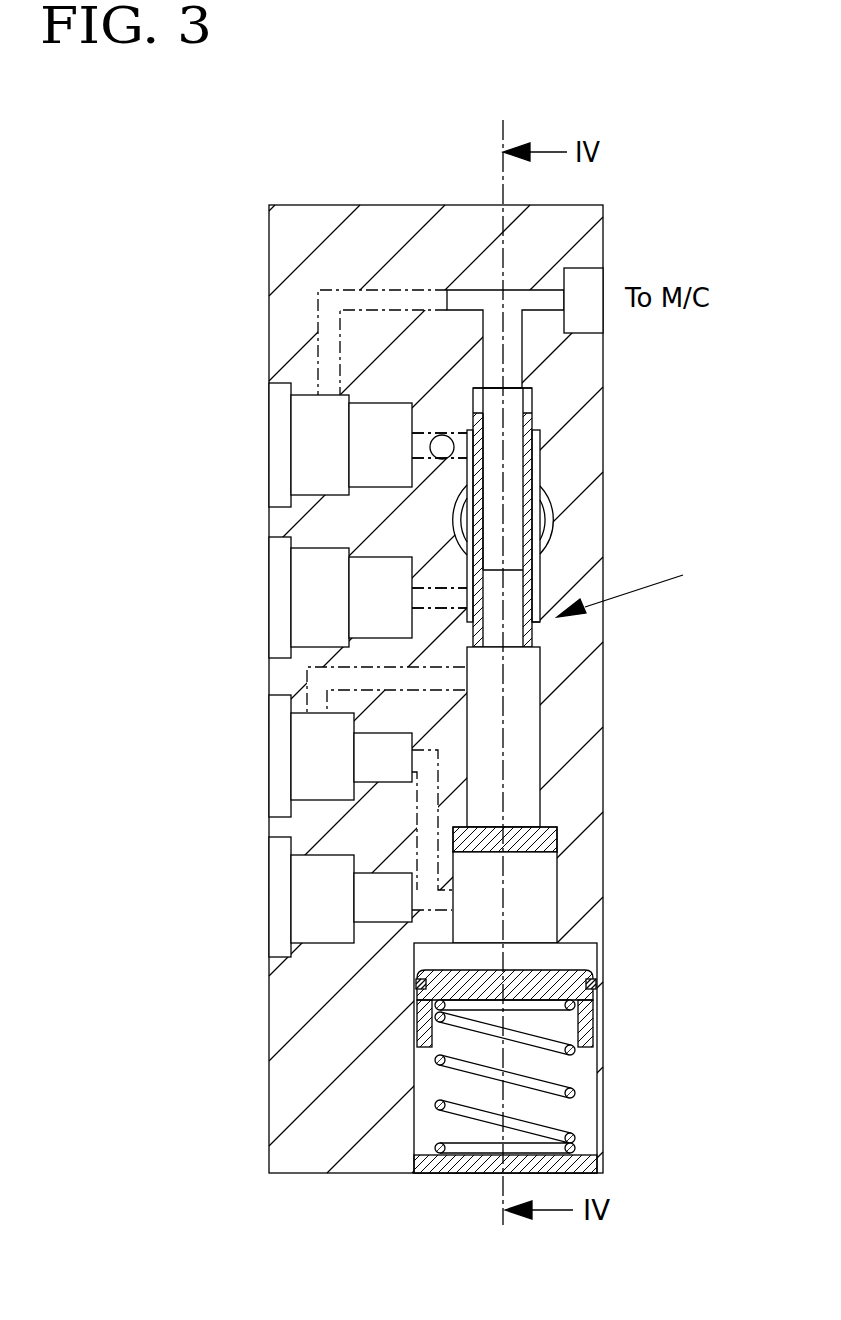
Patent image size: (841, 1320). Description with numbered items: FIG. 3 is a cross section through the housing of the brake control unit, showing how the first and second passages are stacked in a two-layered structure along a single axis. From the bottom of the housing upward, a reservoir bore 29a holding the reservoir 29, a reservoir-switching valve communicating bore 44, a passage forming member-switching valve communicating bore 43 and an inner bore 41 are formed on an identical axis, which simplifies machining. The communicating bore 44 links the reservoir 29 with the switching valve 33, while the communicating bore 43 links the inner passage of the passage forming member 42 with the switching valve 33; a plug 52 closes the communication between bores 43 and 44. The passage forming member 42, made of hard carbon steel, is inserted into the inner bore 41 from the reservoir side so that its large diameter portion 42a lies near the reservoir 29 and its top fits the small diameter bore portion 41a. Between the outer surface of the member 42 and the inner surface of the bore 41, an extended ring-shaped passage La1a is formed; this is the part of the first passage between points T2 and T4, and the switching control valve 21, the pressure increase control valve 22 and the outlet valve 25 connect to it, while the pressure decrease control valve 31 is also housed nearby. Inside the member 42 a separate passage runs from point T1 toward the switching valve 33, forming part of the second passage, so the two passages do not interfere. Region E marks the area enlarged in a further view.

The switching control valve 21 is at (268, 432).
The pressure increase control valve 22 is at (268, 590).
The switching valve 33 is at (268, 768).
The pressure decrease control valve 31 is at (268, 912).
The point T1 is at (548, 272).
The point T2 is at (465, 437).
The point T4 is at (463, 610).
The inner bore 41 is at (540, 567).
The small diameter bore portion 41a is at (540, 397).
The extended ring-shaped passage La1a is at (540, 455).
The passage forming member 42 is at (547, 478).
The large diameter portion 42a is at (540, 635).
The outlet valve 25 is at (540, 525).
The enlarged region E is at (628, 586).
The passage forming member-switching valve communicating bore 43 is at (540, 670).
The plug 52 is at (557, 858).
The reservoir-switching valve communicating bore 44 is at (557, 902).
The reservoir 29 is at (580, 958).
The reservoir bore 29a is at (598, 1062).